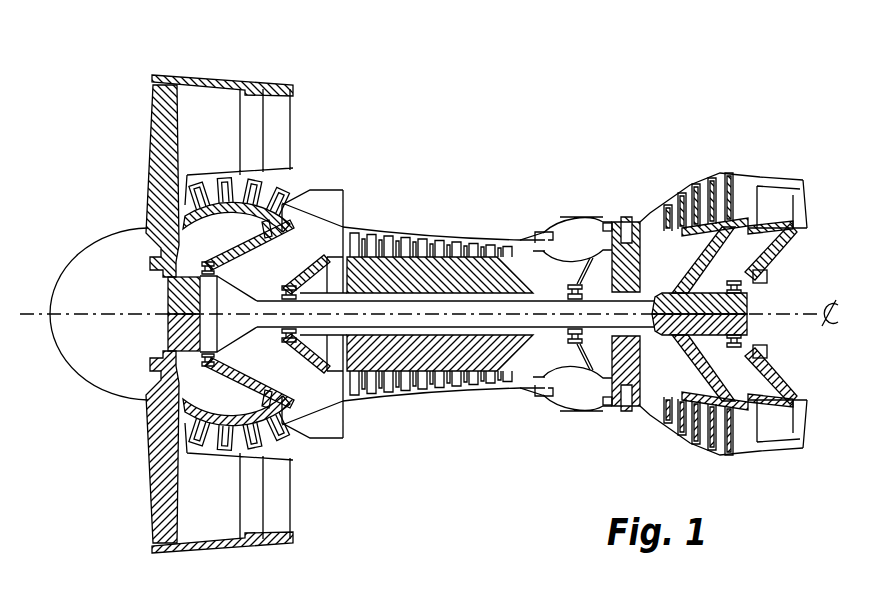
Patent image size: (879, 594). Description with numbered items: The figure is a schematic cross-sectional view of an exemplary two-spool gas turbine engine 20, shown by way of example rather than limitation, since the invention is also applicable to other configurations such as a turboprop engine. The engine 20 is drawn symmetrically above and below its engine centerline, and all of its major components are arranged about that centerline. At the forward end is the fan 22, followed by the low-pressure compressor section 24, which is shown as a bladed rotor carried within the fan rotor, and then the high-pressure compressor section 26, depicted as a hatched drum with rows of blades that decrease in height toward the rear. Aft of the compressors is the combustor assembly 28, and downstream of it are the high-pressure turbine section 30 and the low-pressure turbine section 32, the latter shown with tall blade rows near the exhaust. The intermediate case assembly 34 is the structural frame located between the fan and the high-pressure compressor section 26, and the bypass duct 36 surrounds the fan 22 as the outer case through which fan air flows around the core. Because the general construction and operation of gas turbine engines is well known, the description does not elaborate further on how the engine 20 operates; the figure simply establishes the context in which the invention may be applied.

The gas turbine engine 20 is at (489, 162).
The fan 22 is at (150, 113).
The low-pressure compressor section 24 is at (211, 178).
The high-pressure compressor section 26 is at (405, 237).
The combustor assembly 28 is at (570, 223).
The high-pressure turbine section 30 is at (634, 212).
The low-pressure turbine section 32 is at (710, 174).
The intermediate case assembly 34 is at (344, 190).
The bypass duct 36 is at (296, 113).